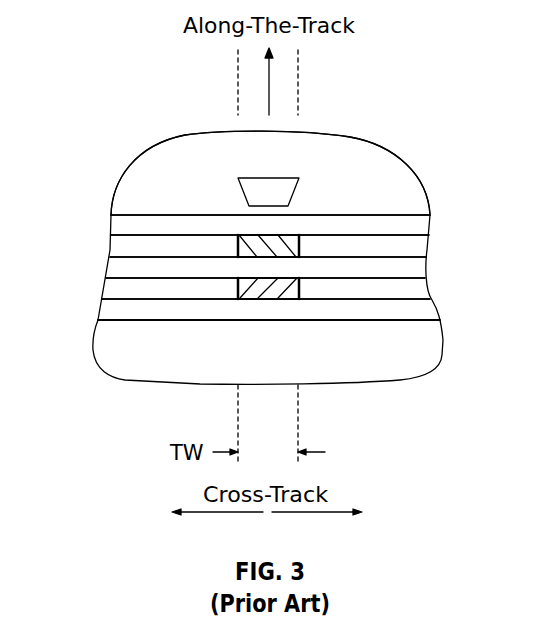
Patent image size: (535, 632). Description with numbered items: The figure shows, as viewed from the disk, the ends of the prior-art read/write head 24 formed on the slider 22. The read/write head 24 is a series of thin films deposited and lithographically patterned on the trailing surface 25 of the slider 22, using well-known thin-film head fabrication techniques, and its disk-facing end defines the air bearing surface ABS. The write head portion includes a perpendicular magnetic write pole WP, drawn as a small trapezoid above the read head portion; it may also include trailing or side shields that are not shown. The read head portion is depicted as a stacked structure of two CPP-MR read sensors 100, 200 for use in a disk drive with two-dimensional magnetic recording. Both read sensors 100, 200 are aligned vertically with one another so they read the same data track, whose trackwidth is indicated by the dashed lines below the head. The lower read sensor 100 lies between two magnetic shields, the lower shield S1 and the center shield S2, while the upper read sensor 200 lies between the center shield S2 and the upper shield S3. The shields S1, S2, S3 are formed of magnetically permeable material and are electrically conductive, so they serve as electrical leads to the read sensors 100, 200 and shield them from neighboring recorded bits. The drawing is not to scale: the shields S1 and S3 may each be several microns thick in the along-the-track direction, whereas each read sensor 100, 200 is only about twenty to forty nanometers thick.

The slider 22 is at (126, 378).
The read/write head 24 is at (60, 177).
The trailing surface 25 is at (130, 320).
The lower read sensor 100 is at (290, 292).
The upper read sensor 200 is at (252, 240).
The lower shield S1 is at (425, 308).
The center shield S2 is at (418, 266).
The upper shield S3 is at (418, 222).
The perpendicular magnetic write pole WP is at (300, 190).
The air bearing surface ABS is at (163, 160).